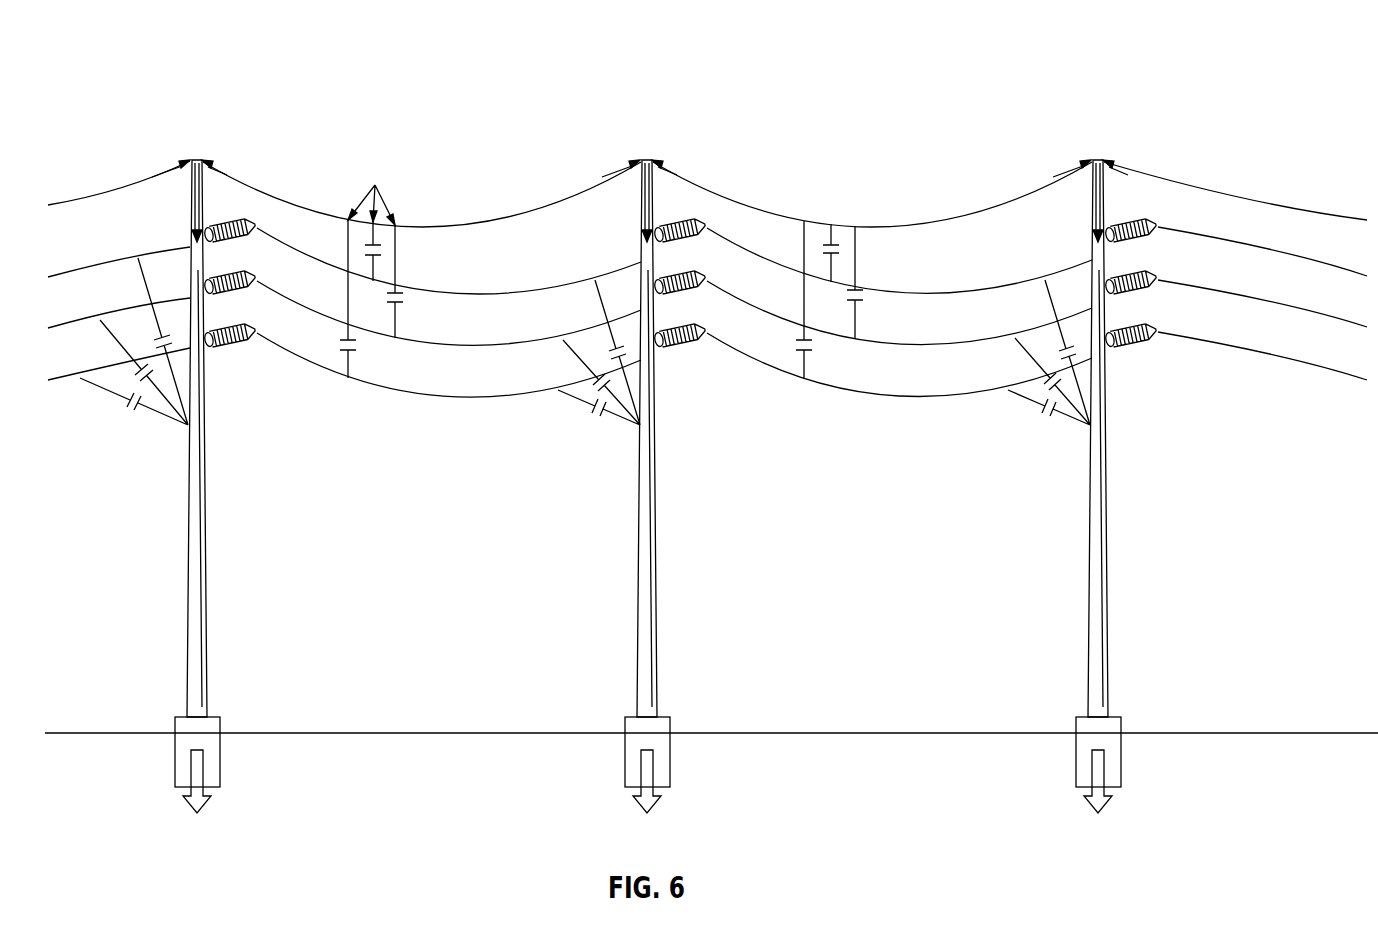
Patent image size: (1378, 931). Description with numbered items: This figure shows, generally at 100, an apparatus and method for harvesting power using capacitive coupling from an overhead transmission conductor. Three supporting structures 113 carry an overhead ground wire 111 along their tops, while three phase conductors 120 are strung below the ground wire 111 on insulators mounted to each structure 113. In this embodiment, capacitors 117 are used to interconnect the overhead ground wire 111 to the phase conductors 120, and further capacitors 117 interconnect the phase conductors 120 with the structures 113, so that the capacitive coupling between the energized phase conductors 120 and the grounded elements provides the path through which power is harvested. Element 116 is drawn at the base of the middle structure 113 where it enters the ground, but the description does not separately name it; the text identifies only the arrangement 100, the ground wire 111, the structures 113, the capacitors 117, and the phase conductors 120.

The power harvesting arrangement 100 is at (932, 97).
The overhead ground wire 111 is at (713, 196).
The structures 113 is at (207, 545).
The pole grounding base 116 is at (635, 770).
The capacitors 117 is at (340, 340).
The phase conductors 120 is at (777, 265).